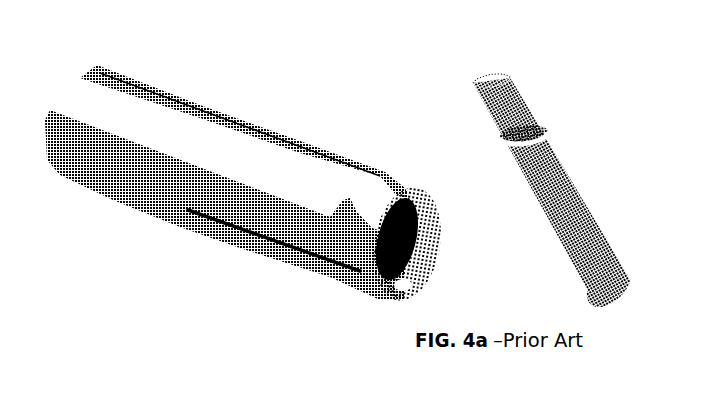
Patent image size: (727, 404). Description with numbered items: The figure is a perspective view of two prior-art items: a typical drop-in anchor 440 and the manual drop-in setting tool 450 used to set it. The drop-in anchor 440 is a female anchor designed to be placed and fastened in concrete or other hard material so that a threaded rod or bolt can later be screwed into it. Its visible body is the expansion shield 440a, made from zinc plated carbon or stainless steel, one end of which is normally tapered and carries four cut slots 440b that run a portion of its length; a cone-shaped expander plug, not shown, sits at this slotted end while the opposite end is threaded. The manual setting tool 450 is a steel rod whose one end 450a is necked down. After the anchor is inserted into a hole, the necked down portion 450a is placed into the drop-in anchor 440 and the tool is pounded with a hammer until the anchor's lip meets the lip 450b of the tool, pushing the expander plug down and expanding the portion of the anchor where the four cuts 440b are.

The drop-in anchor 440 is at (245, 70).
The expansion shield 440a is at (110, 204).
The cut slots 440b is at (356, 279).
The manual drop-in setting tool 450 is at (613, 158).
The necked down end 450a is at (513, 56).
The lip 450b is at (551, 114).